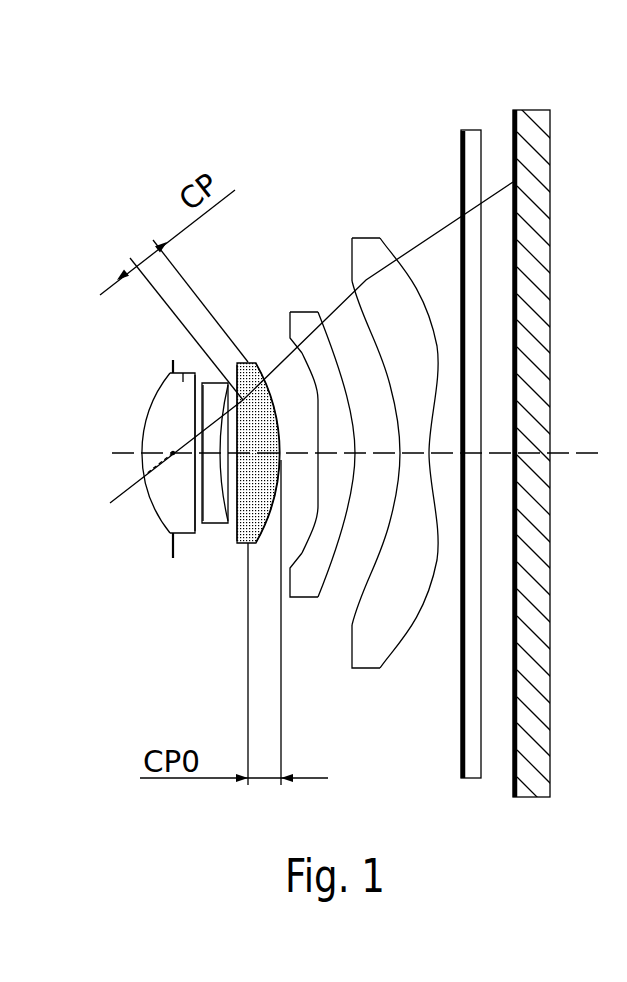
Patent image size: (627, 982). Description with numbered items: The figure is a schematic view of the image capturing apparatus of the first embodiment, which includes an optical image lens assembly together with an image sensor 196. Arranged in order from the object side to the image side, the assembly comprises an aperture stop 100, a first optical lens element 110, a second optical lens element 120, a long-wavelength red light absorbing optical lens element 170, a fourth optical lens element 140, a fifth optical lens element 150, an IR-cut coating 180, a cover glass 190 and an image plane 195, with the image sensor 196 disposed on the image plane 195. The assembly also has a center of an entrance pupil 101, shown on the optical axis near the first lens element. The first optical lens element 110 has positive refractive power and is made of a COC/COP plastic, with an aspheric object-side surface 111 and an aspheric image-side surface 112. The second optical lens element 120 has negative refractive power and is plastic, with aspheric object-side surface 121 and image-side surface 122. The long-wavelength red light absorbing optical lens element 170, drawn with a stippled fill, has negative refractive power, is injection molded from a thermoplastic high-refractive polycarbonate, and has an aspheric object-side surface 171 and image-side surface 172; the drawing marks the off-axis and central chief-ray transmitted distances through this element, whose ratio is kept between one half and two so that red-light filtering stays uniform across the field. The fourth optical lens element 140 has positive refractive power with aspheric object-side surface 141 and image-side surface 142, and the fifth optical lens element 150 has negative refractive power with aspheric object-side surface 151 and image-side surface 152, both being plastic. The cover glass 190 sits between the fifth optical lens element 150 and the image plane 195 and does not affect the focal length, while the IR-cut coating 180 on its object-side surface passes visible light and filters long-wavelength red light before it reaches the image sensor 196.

The aperture stop 100 is at (170, 373).
The center of an entrance pupil 101 is at (172, 451).
The first optical lens element 110 is at (185, 372).
The object-side surface of the first optical lens element 111 is at (166, 521).
The image-side surface of the first optical lens element 112 is at (172, 522).
The second optical lens element 120 is at (208, 383).
The object-side surface of the second optical lens element 121 is at (200, 524).
The image-side surface of the second optical lens element 122 is at (222, 524).
The long-wavelength red light absorbing optical lens element 170 is at (248, 363).
The object-side surface of the long-wavelength red light absorbing optical lens elem 171 is at (237, 545).
The image-side surface of the long-wavelength red light absorbing optical lens eleme 172 is at (265, 545).
The fourth optical lens element 140 is at (305, 312).
The object-side surface of the fourth optical lens element 141 is at (297, 598).
The image-side surface of the fourth optical lens element 142 is at (325, 575).
The fifth optical lens element 150 is at (367, 238).
The object-side surface of the fifth optical lens element 151 is at (355, 668).
The image-side surface of the fifth optical lens element 152 is at (397, 640).
The IR-cut coating 180 is at (461, 152).
The cover glass 190 is at (472, 133).
The image plane 195 is at (513, 125).
The image sensor 196 is at (540, 120).